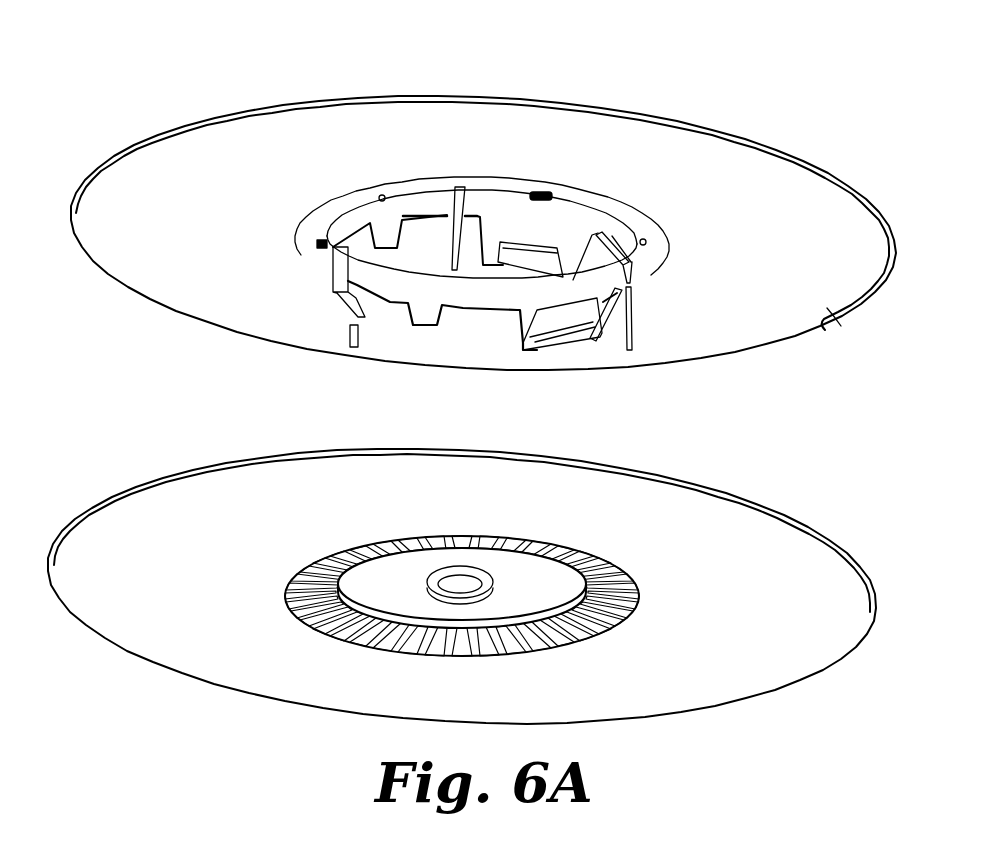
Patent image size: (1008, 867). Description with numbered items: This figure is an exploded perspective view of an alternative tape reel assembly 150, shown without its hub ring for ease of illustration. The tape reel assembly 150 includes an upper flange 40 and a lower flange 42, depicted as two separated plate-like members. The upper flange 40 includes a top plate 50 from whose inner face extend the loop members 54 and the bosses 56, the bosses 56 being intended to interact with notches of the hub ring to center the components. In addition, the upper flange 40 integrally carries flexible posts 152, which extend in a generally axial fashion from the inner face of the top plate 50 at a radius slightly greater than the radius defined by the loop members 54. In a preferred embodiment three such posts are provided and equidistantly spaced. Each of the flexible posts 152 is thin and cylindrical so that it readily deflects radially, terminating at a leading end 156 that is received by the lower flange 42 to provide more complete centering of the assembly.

The tape reel assembly 150 is at (606, 78).
The upper flange 40 is at (739, 133).
The lower flange 42 is at (761, 499).
The top plate 50 is at (835, 316).
The flexible posts 152 is at (458, 187).
The loop members 54 is at (557, 230).
The bosses 56 is at (545, 192).
The leading end 156 is at (633, 347).